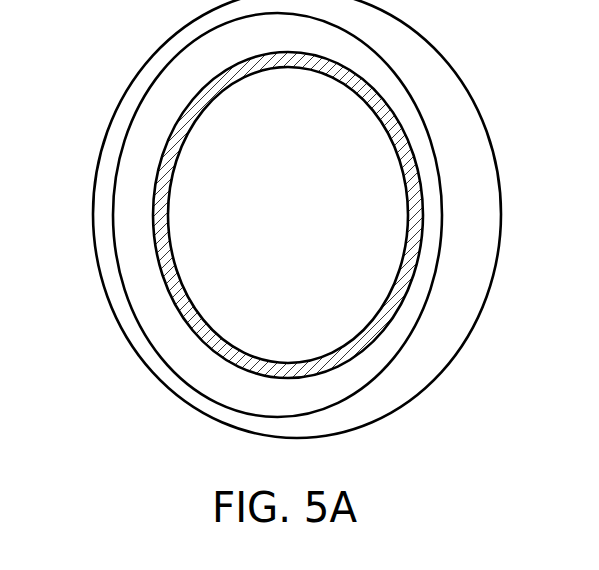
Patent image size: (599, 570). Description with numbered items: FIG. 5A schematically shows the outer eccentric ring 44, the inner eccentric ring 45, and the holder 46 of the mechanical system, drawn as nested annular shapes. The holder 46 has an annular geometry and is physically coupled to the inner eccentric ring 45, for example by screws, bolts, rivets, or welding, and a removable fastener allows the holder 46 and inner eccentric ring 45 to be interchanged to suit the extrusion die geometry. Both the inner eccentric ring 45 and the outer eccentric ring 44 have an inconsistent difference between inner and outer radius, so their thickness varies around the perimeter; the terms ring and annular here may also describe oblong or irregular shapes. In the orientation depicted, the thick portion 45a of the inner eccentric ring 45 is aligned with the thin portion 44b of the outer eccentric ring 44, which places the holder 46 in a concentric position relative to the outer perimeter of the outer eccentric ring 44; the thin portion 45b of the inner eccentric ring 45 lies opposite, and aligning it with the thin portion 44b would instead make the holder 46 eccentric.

The outer eccentric ring 44 is at (484, 166).
The thin portion of the outer eccentric ring 44b is at (113, 287).
The inner eccentric ring 45 is at (432, 252).
The thick portion of the inner eccentric ring 45a is at (123, 229).
The thin portion of the inner eccentric ring 45b is at (418, 139).
The holder 46 is at (385, 318).